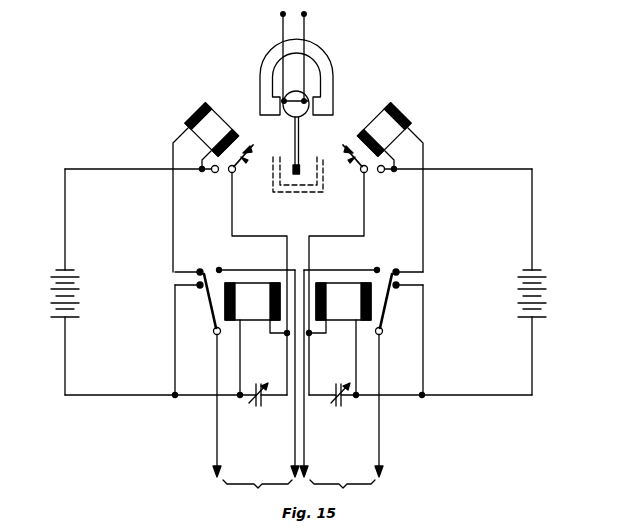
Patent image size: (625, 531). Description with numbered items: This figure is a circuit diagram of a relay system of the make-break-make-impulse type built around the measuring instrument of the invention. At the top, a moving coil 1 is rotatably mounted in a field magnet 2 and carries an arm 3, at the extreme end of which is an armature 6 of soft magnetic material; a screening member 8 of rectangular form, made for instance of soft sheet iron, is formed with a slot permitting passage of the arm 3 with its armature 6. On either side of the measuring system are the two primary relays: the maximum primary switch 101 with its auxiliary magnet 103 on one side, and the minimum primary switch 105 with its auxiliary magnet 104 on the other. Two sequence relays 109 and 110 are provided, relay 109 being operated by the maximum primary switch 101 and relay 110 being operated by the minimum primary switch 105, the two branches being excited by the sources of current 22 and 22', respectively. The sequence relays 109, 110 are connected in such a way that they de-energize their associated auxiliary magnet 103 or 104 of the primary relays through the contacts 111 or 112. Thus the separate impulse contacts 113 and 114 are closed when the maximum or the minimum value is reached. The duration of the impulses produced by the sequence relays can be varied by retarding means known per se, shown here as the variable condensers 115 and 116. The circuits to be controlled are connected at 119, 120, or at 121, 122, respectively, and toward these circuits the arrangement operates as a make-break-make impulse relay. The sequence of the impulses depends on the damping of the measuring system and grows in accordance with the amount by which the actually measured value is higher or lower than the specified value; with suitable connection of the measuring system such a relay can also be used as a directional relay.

The moving coil 1 is at (286, 100).
The field magnet 2 is at (323, 76).
The arm 3 is at (299, 141).
The armature 6 is at (293, 175).
The screening member 8 is at (317, 186).
The source of current 22 is at (556, 282).
The source of current 22' is at (43, 282).
The maximum primary switch 101 is at (343, 140).
The auxiliary magnet 103 is at (404, 113).
The auxiliary magnet 104 is at (190, 113).
The minimum primary switch 105 is at (250, 143).
The sequence relay 109 is at (371, 296).
The sequence relay 110 is at (225, 296).
The contact 111 is at (399, 283).
The contact 112 is at (197, 283).
The impulse contact 113 is at (385, 266).
The impulse contact 114 is at (211, 266).
The variable condenser 115 is at (345, 399).
The variable condenser 116 is at (253, 399).
The controlled circuit connection 119 is at (306, 437).
The controlled circuit connection 120 is at (381, 443).
The controlled circuit connection 121 is at (216, 442).
The controlled circuit connection 122 is at (293, 438).